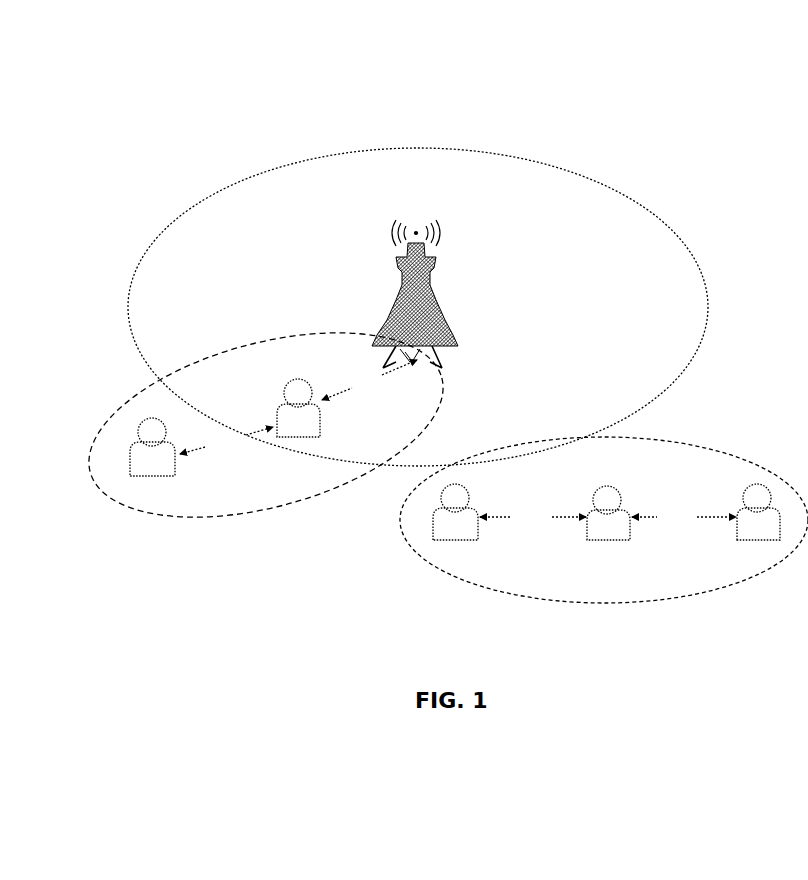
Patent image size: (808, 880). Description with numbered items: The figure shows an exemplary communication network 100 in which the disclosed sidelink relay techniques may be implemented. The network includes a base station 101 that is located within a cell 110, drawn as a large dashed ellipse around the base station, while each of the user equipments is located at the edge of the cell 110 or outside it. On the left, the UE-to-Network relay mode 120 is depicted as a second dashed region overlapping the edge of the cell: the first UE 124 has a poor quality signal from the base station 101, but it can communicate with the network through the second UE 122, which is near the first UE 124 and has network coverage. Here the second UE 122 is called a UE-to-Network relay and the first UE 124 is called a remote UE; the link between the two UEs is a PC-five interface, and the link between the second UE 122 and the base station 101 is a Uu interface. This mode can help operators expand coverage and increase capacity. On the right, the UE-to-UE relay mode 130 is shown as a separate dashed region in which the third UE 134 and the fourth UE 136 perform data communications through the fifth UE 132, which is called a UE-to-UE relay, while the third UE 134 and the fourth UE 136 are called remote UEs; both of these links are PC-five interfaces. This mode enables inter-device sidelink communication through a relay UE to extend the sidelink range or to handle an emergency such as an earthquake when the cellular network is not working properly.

The communication network 100 is at (106, 80).
The cell 110 is at (657, 217).
The base station 101 is at (440, 270).
The UE-to-Network relay mode 120 is at (132, 408).
The UE 2 122 is at (315, 383).
The UE 1 124 is at (178, 470).
The UE-to-UE relay mode 130 is at (747, 462).
The UE 5 132 is at (623, 498).
The UE 3 134 is at (478, 542).
The UE 4 136 is at (728, 535).